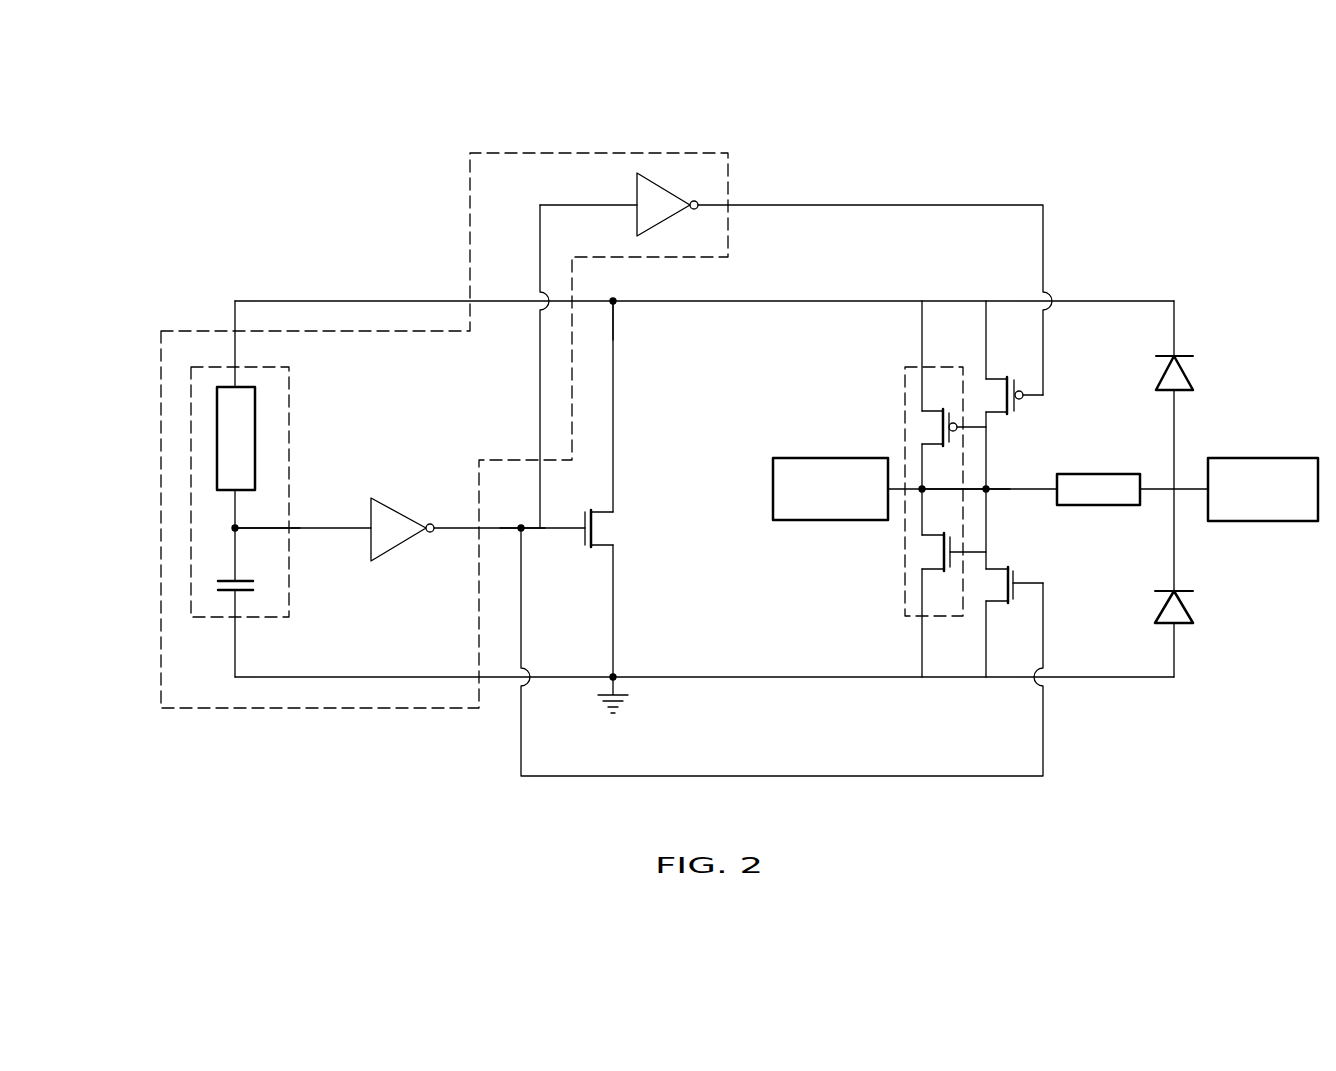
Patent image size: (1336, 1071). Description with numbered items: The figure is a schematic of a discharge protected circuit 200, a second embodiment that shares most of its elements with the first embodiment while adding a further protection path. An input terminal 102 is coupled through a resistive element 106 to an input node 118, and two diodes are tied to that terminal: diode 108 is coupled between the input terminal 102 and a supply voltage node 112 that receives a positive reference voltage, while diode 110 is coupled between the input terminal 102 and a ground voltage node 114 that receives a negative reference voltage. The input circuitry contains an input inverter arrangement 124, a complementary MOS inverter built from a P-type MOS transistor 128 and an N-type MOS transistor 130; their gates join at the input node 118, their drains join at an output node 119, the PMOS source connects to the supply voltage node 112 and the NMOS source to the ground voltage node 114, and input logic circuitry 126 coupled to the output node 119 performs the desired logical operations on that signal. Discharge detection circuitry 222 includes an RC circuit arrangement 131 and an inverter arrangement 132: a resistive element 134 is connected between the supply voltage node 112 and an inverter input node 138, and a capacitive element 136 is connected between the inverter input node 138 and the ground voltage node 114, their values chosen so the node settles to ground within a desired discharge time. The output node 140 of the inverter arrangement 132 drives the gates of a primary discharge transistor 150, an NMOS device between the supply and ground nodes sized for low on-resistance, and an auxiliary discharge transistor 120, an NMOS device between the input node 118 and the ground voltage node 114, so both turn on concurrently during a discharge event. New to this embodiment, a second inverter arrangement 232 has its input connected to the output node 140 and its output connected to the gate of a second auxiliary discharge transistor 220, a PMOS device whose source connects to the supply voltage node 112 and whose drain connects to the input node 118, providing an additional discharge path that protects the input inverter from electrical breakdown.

The discharge protected circuit 200 is at (1054, 161).
The input terminal 102 is at (1263, 458).
The resistive element 106 is at (1096, 474).
The diode 108 is at (1197, 377).
The diode 110 is at (1193, 612).
The supply voltage node 112 is at (616, 303).
The ground voltage node 114 is at (613, 675).
The input node 118 is at (988, 488).
The output node 119 is at (924, 490).
The auxiliary discharge transistor 120 is at (1024, 571).
The input inverter arrangement 124 is at (905, 595).
The input logic circuitry 126 is at (797, 458).
The P-type MOS transistor 128 is at (920, 422).
The N-type MOS transistor 130 is at (920, 552).
The RC circuit arrangement 131 is at (191, 580).
The inverter arrangement 132 is at (403, 484).
The resistive element 134 is at (216, 437).
The capacitive element 136 is at (224, 595).
The inverter input node 138 is at (232, 528).
The output node 140 is at (521, 526).
The primary discharge transistor 150 is at (618, 530).
The second auxiliary discharge transistor 220 is at (1003, 362).
The discharge detection circuitry 222 is at (520, 152).
The second inverter arrangement 232 is at (637, 190).